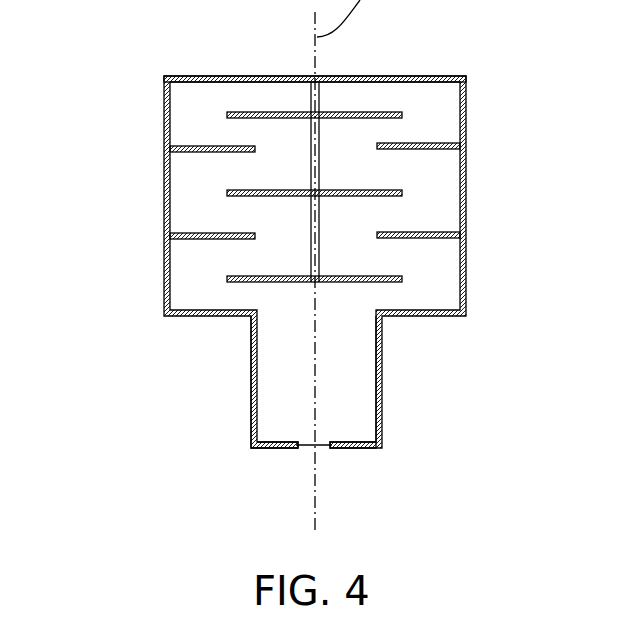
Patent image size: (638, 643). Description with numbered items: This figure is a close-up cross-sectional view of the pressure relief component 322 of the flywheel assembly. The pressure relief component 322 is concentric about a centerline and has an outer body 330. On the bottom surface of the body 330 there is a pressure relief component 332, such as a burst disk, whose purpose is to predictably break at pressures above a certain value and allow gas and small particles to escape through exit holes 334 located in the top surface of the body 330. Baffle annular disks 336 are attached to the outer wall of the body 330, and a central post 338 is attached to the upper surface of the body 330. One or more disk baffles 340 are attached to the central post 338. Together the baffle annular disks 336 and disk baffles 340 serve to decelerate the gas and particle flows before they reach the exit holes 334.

The pressure relief component 322 is at (562, 68).
The outer body 330 is at (164, 116).
The pressure relief component 332 is at (309, 448).
The exit holes 334 is at (233, 78).
The baffle annular disks 336 is at (200, 233).
The central post 338 is at (318, 92).
The disk baffles 340 is at (389, 189).